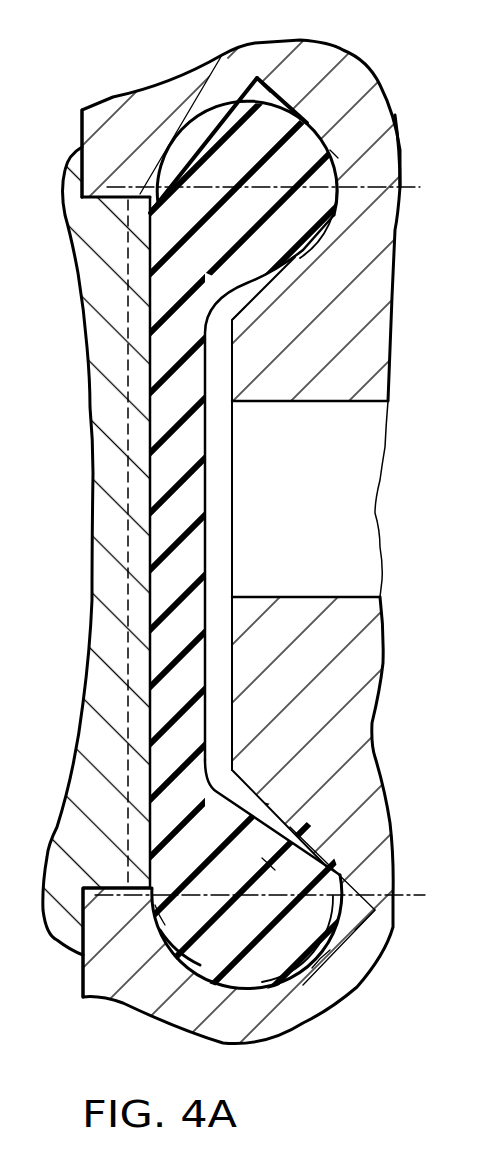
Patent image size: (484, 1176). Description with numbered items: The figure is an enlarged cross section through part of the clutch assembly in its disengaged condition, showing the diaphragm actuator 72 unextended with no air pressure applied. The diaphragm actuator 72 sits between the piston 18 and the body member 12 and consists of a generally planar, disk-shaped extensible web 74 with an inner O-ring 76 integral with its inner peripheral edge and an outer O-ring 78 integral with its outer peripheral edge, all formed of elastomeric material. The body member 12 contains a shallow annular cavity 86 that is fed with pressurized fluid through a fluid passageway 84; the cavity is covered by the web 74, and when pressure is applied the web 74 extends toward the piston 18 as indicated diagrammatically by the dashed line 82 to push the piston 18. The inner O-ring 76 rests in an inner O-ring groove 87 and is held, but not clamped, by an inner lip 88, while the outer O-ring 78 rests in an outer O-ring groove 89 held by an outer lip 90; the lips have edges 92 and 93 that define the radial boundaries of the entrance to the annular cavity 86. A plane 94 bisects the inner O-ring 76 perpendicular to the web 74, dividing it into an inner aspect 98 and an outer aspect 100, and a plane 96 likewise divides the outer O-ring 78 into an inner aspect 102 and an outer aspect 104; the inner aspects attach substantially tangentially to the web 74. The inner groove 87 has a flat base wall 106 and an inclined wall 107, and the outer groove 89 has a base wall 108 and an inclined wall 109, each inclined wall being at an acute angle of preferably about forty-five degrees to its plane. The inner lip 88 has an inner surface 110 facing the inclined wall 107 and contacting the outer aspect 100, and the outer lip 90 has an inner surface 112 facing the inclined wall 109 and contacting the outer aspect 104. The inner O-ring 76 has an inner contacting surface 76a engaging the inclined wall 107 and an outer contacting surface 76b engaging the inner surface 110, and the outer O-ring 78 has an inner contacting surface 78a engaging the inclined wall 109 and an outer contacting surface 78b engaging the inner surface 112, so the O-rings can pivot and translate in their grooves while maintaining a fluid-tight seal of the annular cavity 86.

The body member 12 is at (373, 350).
The piston 18 is at (103, 348).
The diaphragm actuator 72 is at (272, 545).
The extensible web 74 is at (190, 511).
The inner O-ring 76 is at (279, 930).
The inner contacting surface 76a is at (320, 850).
The outer contacting surface 76b is at (200, 962).
The outer O-ring 78 is at (258, 136).
The inner contacting surface 78a is at (310, 236).
The outer contacting surface 78b is at (192, 138).
The dashed line 82 is at (127, 500).
The fluid passageway 84 is at (357, 502).
The annular cavity 86 is at (218, 452).
The inner O-ring groove 87 is at (377, 918).
The inner lip 88 is at (112, 945).
The outer O-ring groove 89 is at (333, 162).
The outer lip 90 is at (137, 168).
The edge 92 is at (98, 880).
The edge 93 is at (128, 204).
The plane 94 is at (405, 893).
The plane 96 is at (404, 192).
The inner aspect 98 is at (270, 850).
The outer aspect 100 is at (328, 1000).
The inner aspect 102 is at (248, 222).
The outer aspect 104 is at (248, 82).
The base wall 106 is at (355, 937).
The inclined wall 107 is at (247, 790).
The base wall 108 is at (337, 152).
The inclined wall 109 is at (246, 310).
The inner surface 110 is at (148, 912).
The inner surface 112 is at (268, 82).